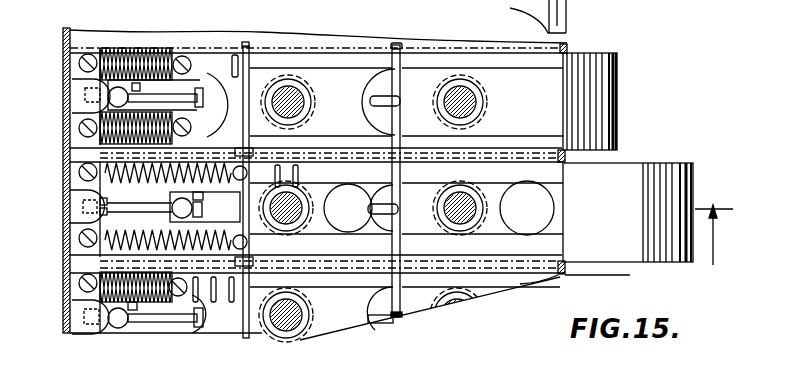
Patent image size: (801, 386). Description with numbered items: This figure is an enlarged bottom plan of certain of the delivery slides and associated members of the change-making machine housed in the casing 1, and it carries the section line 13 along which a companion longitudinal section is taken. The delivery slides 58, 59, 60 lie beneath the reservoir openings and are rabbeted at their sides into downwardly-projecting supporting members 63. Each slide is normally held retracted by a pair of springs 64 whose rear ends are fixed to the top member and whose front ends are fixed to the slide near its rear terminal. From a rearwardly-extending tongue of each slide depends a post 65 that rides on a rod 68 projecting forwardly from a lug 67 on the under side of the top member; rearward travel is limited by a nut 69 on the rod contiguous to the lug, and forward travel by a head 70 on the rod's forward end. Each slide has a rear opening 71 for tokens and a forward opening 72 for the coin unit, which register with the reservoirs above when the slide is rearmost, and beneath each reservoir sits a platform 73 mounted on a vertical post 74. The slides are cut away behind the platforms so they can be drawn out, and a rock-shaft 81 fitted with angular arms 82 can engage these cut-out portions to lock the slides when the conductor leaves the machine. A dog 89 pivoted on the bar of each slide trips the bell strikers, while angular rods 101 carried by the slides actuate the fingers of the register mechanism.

The casing 1 is at (63, 133).
The section line 13 is at (63, 206).
The delivery slide 58 is at (505, 284).
The delivery slide 59 is at (628, 212).
The delivery slide 60 is at (560, 101).
The supporting member 63 is at (357, 158).
The spring 64 is at (150, 58).
The post 65 is at (113, 90).
The lug 67 is at (80, 93).
The rod 68 is at (203, 102).
The nut 69 is at (108, 96).
The head 70 is at (198, 90).
The rear opening 71 is at (252, 355).
The forward opening 72 is at (493, 95).
The platform 73 is at (306, 101).
The vertical post 74 is at (311, 89).
The rock-shaft 81 is at (400, 63).
The angular arm 82 is at (377, 97).
The dog 89 is at (141, 87).
The angular rod 101 is at (234, 54).